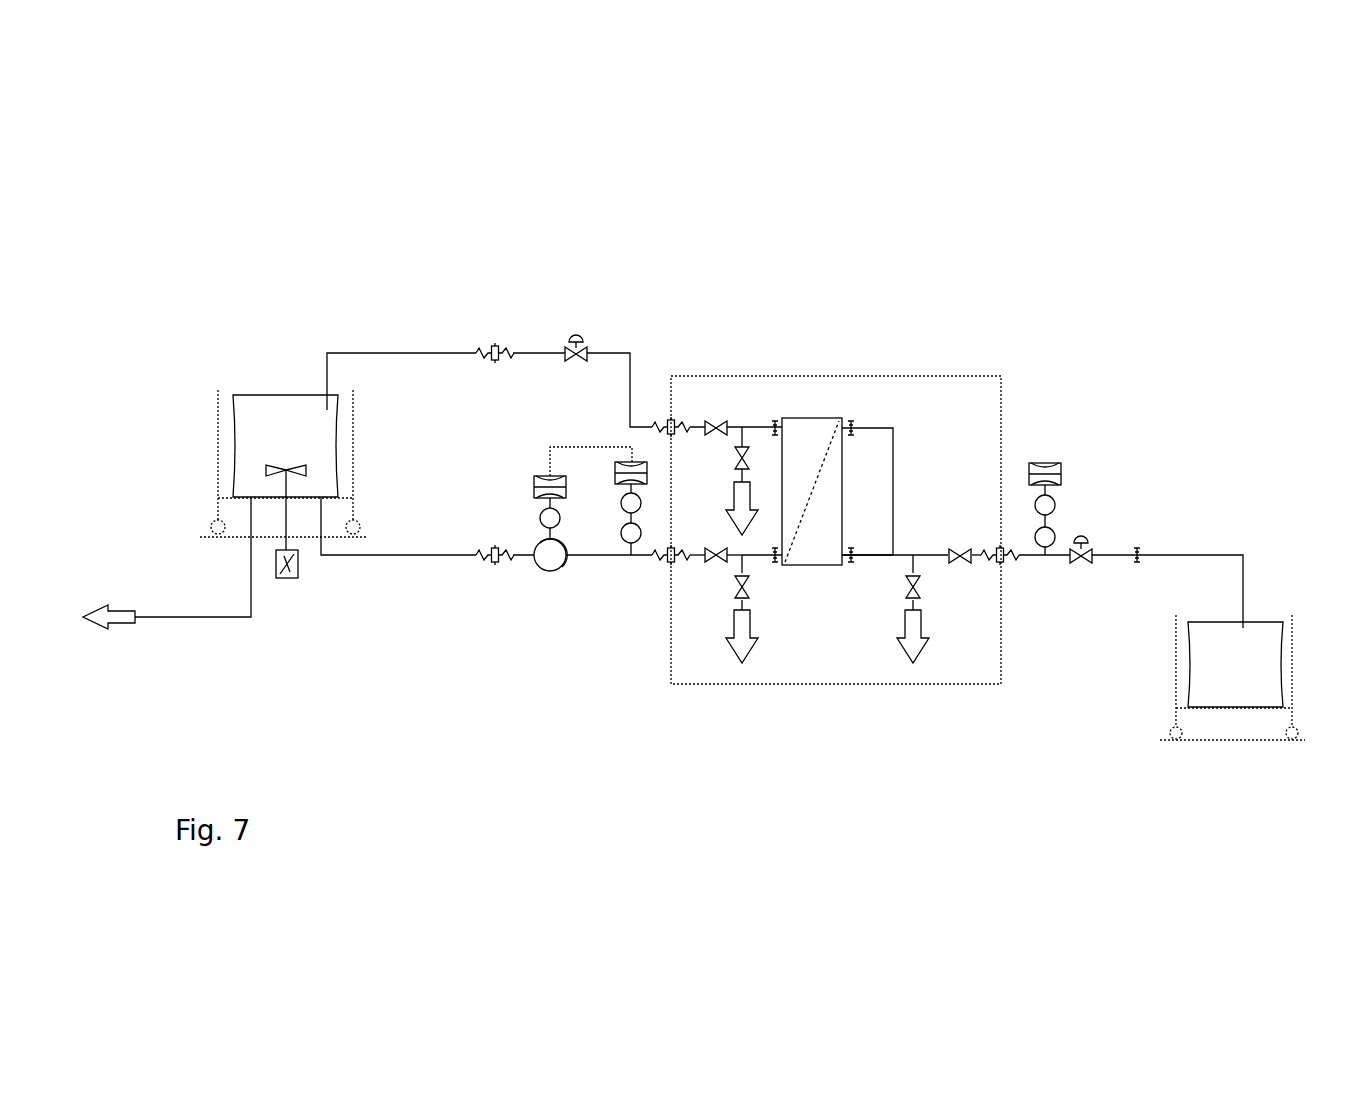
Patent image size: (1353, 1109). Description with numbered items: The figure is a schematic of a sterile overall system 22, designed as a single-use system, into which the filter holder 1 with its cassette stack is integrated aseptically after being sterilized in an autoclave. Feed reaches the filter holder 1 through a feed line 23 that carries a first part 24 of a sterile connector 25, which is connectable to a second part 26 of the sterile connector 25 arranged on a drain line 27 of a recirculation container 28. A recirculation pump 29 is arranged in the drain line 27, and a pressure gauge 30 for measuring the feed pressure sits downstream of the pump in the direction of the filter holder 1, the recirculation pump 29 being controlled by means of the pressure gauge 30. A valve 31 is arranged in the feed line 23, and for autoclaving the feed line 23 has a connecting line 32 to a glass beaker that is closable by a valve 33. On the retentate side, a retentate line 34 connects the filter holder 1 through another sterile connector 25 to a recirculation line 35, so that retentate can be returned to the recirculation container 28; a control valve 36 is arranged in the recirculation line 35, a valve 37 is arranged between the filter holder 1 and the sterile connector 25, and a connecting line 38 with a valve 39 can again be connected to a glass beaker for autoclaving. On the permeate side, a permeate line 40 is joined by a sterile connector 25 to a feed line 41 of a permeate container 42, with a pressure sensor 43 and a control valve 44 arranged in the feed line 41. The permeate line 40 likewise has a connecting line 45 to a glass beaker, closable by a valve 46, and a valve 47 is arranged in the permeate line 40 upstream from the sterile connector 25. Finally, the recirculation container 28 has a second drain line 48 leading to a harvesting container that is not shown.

The filter holder 1 is at (857, 409).
The sterile overall system 22 is at (1083, 312).
The feed line 23 is at (755, 553).
The first part of sterile connector 24 is at (712, 562).
The sterile connector 25 is at (676, 408).
The second part of sterile connector 26 is at (670, 560).
The drain line 27 is at (403, 558).
The recirculation container 28 is at (268, 420).
The recirculation pump 29 is at (545, 567).
The pressure gauge 30 is at (628, 535).
The valve 31 is at (733, 582).
The connecting line 32 is at (743, 560).
The valve 33 is at (707, 627).
The retentate line 34 is at (757, 427).
The recirculation line 35 is at (401, 352).
The control valve 36 is at (584, 350).
The valve 37 is at (723, 423).
The connecting line 38 is at (745, 438).
The valve 39 is at (745, 462).
The permeate line 40 is at (930, 554).
The feed line 41 is at (1127, 555).
The permeate container 42 is at (1258, 647).
The pressure sensor 43 is at (1047, 472).
The control valve 44 is at (1088, 548).
The connecting line 45 is at (970, 562).
The valve 46 is at (913, 568).
The valve 47 is at (978, 577).
The second drain line 48 is at (207, 620).